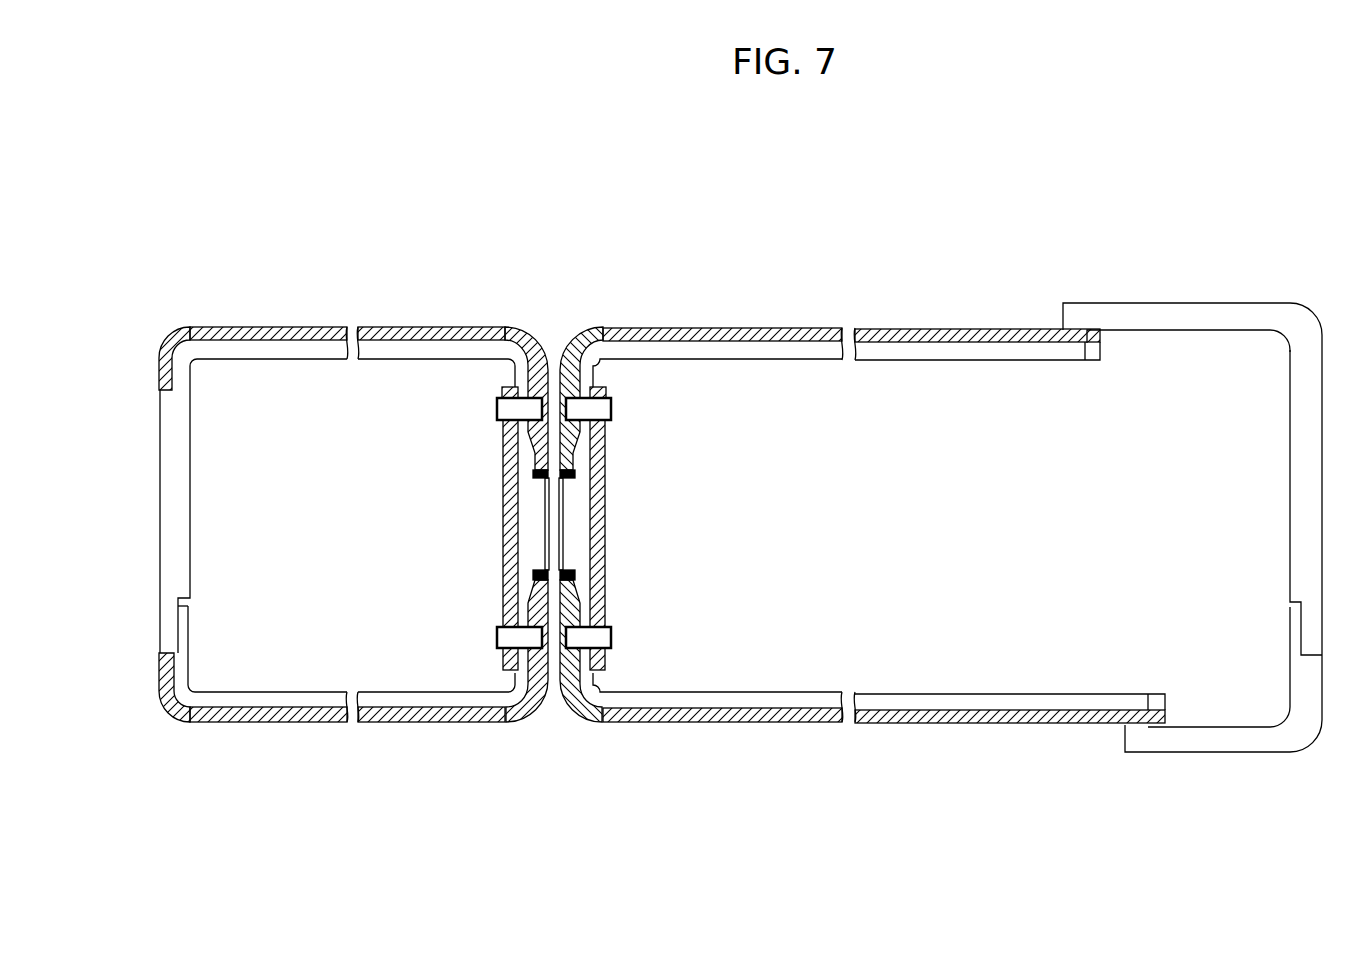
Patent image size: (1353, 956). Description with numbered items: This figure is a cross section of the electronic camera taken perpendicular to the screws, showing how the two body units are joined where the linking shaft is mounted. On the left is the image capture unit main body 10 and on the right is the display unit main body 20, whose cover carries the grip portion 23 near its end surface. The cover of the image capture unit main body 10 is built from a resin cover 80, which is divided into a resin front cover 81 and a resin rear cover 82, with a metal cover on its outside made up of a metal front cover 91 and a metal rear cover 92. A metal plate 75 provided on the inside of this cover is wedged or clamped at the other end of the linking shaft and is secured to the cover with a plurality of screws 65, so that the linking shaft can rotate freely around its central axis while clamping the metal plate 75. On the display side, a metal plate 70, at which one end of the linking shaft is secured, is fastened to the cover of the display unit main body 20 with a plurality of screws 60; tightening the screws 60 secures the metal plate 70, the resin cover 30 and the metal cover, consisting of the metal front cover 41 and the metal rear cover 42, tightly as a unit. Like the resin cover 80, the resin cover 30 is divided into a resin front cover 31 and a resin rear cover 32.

The image capture unit main body 10 is at (432, 312).
The display unit main body 20 is at (790, 307).
The grip portion 23 is at (1232, 322).
The resin cover 30 is at (1173, 645).
The resin front cover 31 is at (1305, 553).
The resin rear cover 32 is at (1302, 710).
The metal front cover 41 is at (1003, 330).
The metal rear cover 42 is at (1062, 728).
The screws 60 is at (600, 408).
The screws 65 is at (507, 409).
The metal plate 70 is at (605, 492).
The metal plate 75 is at (503, 514).
The resin cover 80 is at (290, 600).
The resin front cover 81 is at (287, 520).
The resin rear cover 82 is at (200, 693).
The metal front cover 91 is at (262, 322).
The metal rear cover 92 is at (378, 725).